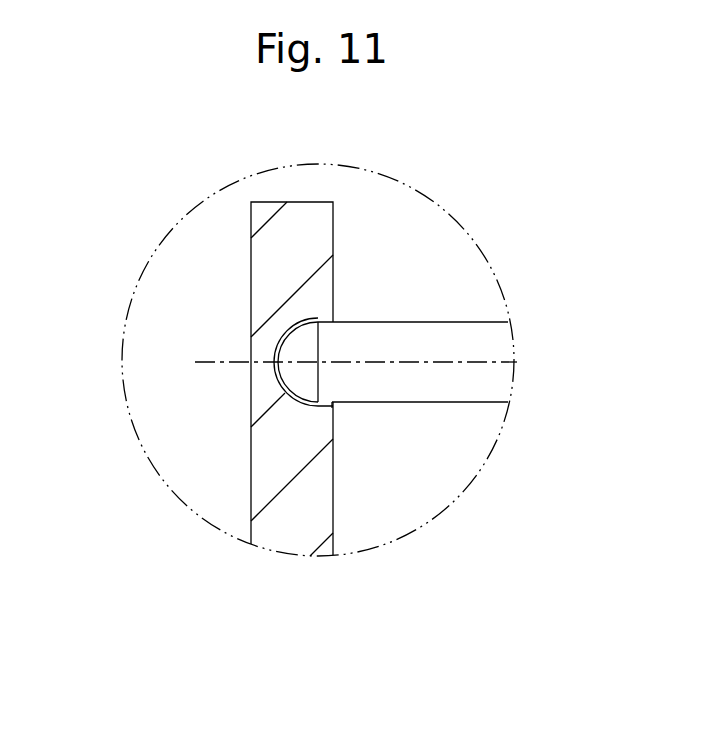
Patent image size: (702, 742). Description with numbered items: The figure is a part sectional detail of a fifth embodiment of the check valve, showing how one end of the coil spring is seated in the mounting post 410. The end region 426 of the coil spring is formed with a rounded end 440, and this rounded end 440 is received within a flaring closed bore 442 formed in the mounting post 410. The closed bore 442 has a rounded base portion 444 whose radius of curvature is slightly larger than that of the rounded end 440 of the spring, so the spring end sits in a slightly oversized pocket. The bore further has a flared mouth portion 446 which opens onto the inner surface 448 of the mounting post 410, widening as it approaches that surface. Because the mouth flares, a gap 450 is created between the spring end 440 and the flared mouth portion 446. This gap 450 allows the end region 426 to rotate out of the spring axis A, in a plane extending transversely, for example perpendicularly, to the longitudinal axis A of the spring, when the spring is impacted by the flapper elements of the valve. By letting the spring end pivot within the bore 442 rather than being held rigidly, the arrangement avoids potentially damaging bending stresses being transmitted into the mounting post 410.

The mounting post 410 is at (272, 202).
The rounded end 440 is at (287, 340).
The flaring closed bore 442 is at (316, 318).
The rounded base portion 444 is at (283, 388).
The flared mouth portion 446 is at (323, 316).
The end region 426 is at (477, 333).
The inner surface 448 is at (335, 478).
The gap 450 is at (330, 401).
The spring axis A is at (203, 362).